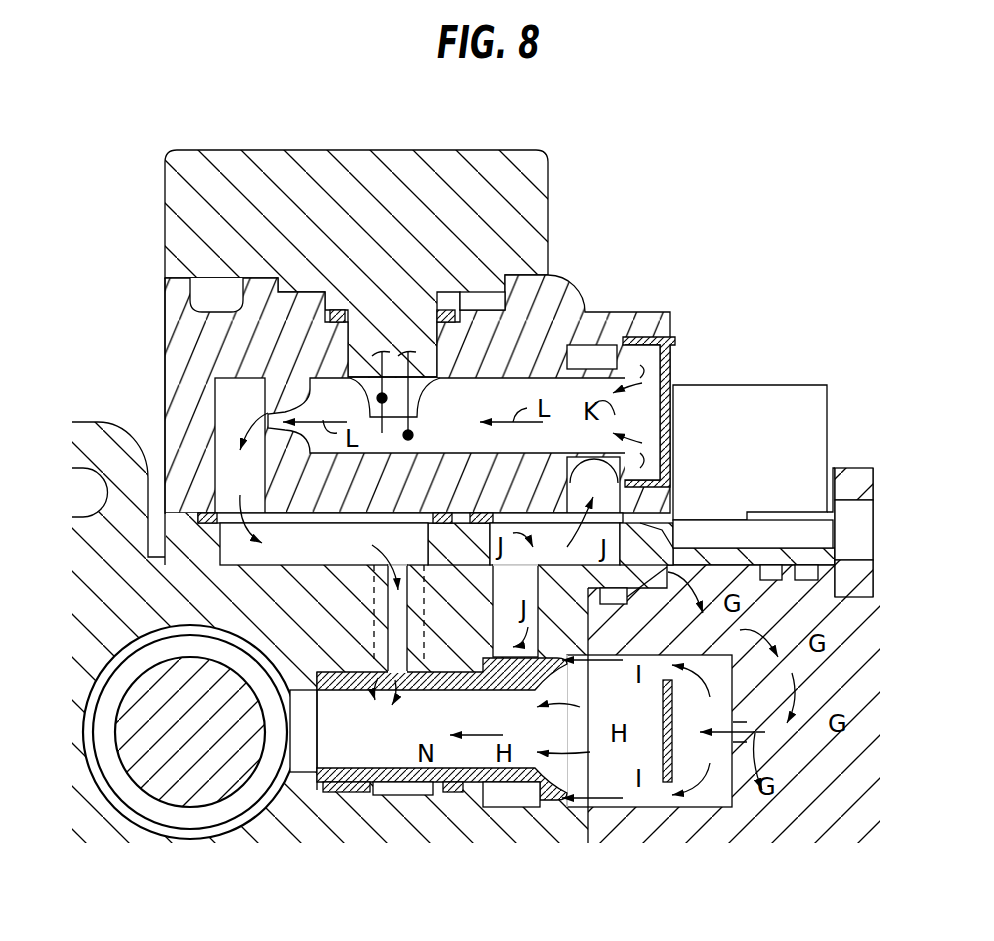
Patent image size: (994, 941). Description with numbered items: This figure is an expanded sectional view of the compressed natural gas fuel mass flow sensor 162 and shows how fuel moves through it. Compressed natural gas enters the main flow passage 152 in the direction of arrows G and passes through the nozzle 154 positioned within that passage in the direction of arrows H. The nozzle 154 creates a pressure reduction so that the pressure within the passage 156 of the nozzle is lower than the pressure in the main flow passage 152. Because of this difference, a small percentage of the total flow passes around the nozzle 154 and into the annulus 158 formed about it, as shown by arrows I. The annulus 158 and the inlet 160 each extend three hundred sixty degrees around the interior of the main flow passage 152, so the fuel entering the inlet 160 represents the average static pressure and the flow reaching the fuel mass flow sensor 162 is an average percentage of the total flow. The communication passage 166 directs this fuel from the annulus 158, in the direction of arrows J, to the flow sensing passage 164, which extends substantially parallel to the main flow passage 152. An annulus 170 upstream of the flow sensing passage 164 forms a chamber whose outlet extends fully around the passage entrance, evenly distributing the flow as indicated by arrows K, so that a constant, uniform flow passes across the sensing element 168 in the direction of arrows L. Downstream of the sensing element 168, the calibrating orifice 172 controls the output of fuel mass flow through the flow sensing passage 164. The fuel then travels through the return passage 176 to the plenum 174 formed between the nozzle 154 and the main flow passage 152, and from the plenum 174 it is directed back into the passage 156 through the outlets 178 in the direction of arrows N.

The main flow passage 152 is at (723, 787).
The nozzle 154 is at (537, 800).
The passage of the nozzle 156 is at (452, 792).
The annulus 158 is at (507, 807).
The inlet 160 is at (562, 650).
The fuel mass flow sensor 162 is at (490, 160).
The flow sensing passage 164 is at (323, 387).
The communication passage 166 is at (662, 530).
The sensing element 168 is at (413, 427).
The annulus 170 is at (637, 348).
The calibrating orifice 172 is at (273, 407).
The plenum 174 is at (308, 735).
The return passage 176 is at (233, 557).
The outlets 178 is at (387, 707).